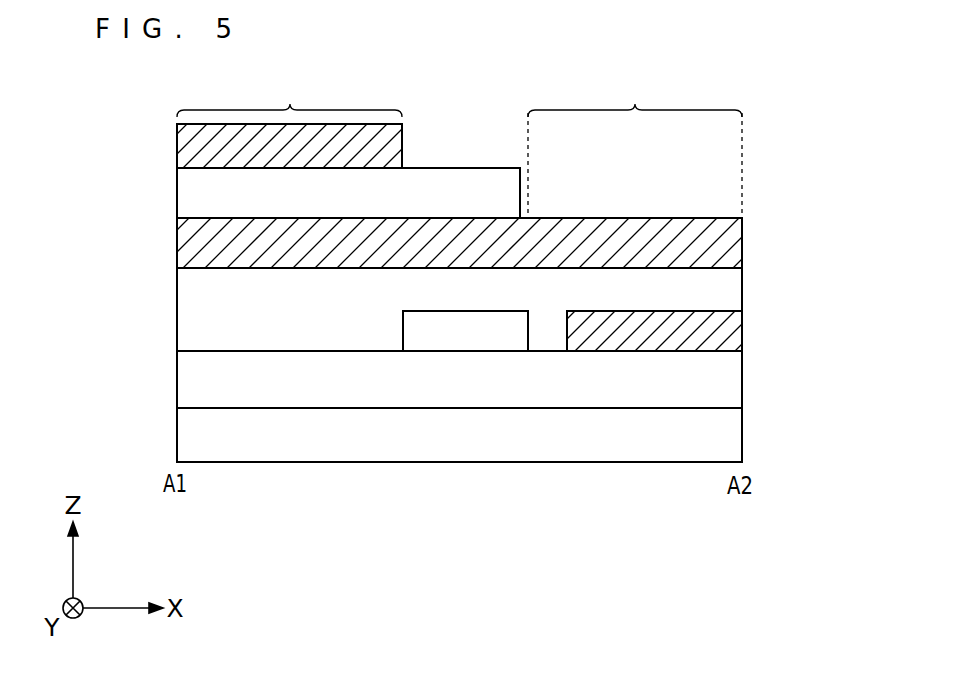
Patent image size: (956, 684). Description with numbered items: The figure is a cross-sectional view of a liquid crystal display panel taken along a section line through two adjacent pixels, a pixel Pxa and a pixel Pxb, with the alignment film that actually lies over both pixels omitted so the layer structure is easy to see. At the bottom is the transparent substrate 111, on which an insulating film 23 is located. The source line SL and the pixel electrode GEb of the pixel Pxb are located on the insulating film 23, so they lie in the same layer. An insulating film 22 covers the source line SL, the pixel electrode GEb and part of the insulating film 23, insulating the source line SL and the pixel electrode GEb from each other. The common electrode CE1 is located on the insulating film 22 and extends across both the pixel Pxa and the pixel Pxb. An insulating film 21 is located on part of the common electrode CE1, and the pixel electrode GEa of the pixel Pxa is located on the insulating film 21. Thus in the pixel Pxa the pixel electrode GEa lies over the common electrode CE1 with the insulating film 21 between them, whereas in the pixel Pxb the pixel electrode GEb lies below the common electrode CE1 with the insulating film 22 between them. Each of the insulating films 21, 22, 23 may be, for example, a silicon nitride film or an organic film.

The transparent substrate 111 is at (192, 440).
The insulating film 23 is at (192, 383).
The insulating film 22 is at (192, 317).
The insulating film 21 is at (192, 195).
The source line SL is at (468, 338).
The pixel electrode GEa is at (192, 150).
The pixel electrode GEb is at (742, 333).
The common electrode CE1 is at (192, 248).
The pixel Pxa is at (289, 97).
The pixel Pxb is at (635, 148).